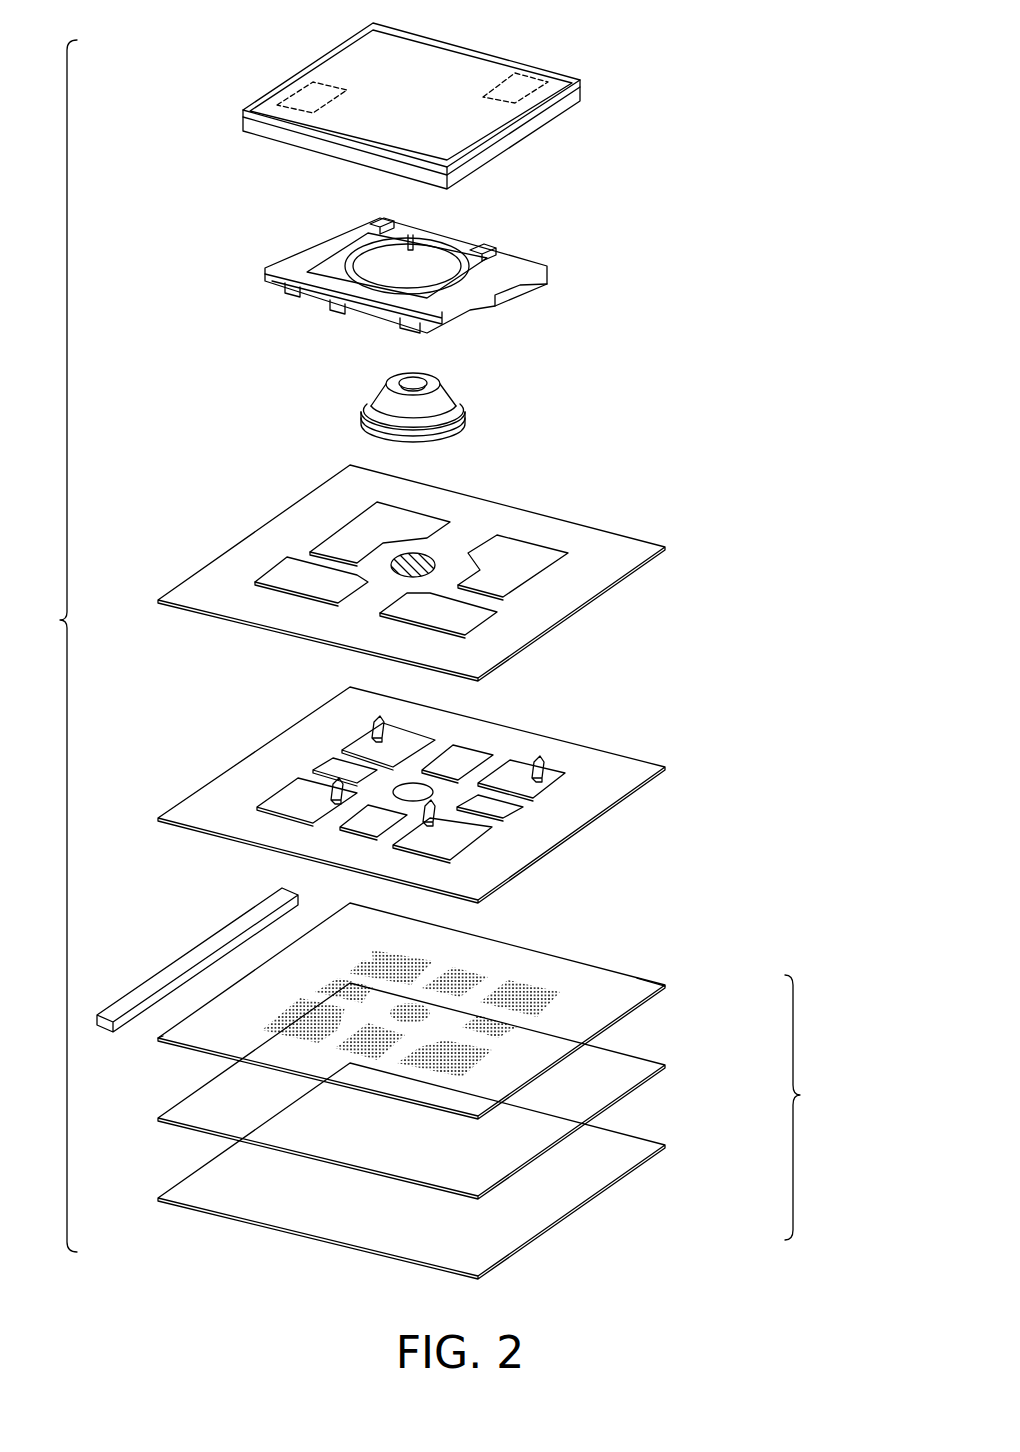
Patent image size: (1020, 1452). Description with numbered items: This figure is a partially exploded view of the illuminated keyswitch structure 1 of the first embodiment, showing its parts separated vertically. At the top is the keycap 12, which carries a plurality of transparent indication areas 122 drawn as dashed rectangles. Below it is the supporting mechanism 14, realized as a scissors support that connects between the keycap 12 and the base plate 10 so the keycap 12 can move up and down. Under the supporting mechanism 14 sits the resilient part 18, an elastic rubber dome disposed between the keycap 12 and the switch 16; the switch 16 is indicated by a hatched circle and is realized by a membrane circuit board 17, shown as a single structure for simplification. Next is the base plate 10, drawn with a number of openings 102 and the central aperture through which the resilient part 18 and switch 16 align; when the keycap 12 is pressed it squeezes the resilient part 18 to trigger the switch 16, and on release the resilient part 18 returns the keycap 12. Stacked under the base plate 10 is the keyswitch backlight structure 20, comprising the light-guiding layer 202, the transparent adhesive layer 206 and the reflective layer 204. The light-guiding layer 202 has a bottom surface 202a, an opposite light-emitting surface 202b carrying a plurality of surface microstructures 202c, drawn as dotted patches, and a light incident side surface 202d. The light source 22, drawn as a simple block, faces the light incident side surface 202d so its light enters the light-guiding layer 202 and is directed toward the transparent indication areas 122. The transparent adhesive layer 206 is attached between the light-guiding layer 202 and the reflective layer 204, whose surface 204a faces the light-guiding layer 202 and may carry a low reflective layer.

The illuminated keyswitch structure 1 is at (58, 646).
The keycap 12 is at (347, 47).
The transparent indication areas 122 is at (293, 90).
The supporting mechanism 14 is at (275, 225).
The resilient part 18 is at (437, 385).
The switch 16 is at (432, 558).
The membrane circuit board 17 is at (612, 535).
The base plate 10 is at (627, 760).
The opening 102 is at (409, 785).
The light source 22 is at (200, 948).
The light-guiding layer 202 is at (637, 978).
The bottom surface 202a is at (645, 1009).
The light-emitting surface 202b is at (565, 1007).
The surface microstructures 202c is at (455, 970).
The light incident side surface 202d is at (163, 1032).
The keyswitch backlight structure 20 is at (811, 1107).
The transparent adhesive layer 206 is at (540, 1133).
The reflective layer 204 is at (527, 1225).
The surface 204a is at (370, 1234).